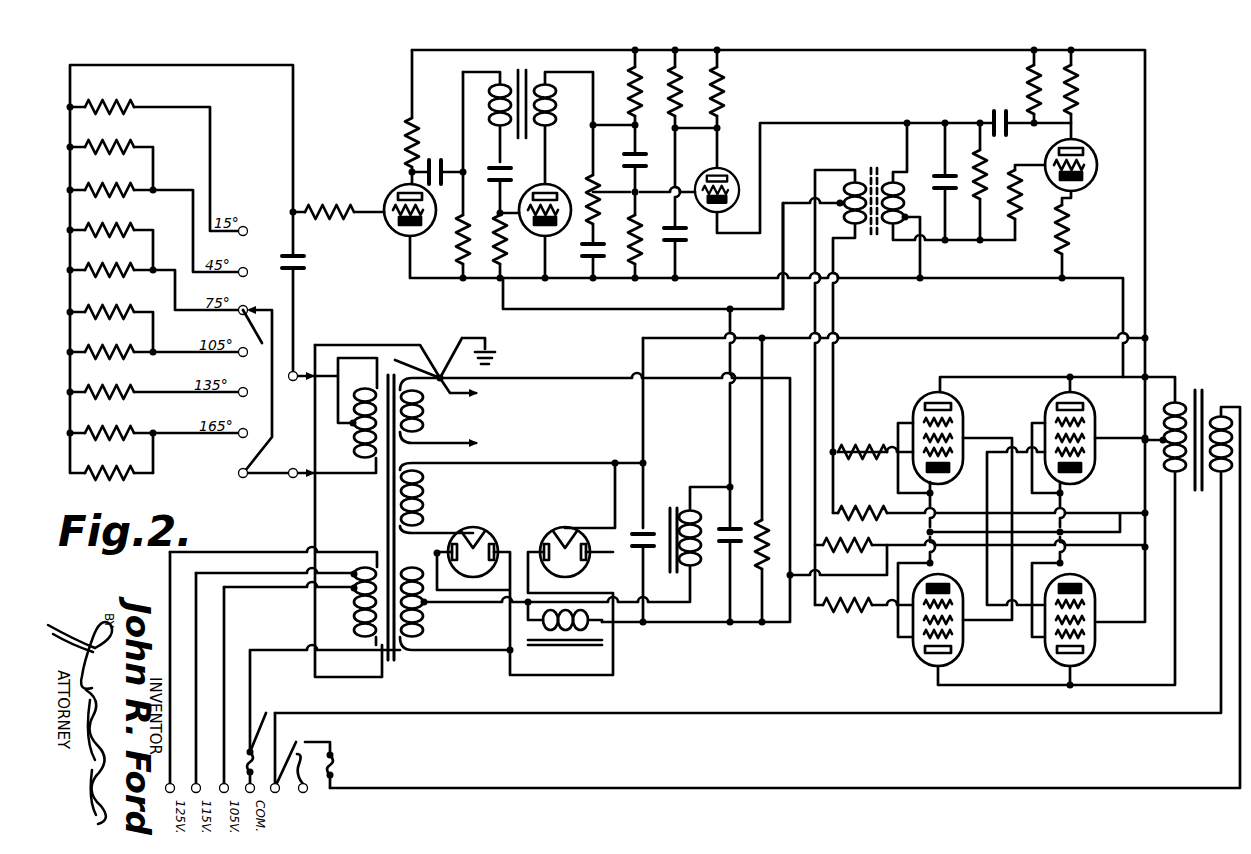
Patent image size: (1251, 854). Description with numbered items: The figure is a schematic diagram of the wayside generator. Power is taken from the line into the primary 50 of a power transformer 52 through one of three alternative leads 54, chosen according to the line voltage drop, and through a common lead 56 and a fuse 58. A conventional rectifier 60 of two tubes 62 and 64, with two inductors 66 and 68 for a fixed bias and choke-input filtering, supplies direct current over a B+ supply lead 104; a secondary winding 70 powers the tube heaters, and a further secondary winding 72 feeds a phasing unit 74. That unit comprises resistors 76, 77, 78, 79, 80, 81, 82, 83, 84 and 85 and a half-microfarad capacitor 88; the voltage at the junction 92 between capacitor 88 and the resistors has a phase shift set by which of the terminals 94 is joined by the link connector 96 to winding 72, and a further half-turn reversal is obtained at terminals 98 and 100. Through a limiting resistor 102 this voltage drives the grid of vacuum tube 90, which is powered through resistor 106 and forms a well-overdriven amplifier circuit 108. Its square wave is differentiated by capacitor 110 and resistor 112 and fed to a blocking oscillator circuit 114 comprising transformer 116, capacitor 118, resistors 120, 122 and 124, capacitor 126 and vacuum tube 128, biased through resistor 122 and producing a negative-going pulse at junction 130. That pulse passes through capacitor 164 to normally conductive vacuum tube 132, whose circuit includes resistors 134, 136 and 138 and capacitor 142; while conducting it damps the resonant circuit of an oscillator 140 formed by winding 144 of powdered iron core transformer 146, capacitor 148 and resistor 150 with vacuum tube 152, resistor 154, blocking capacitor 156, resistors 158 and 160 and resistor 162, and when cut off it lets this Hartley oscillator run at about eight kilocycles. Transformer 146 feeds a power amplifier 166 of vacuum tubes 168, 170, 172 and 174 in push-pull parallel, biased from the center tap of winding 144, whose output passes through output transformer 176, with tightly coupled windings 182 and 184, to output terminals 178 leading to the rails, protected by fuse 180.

The primary 50 is at (373, 567).
The power transformer 52 is at (453, 335).
The alternative leads 54 is at (222, 572).
The lead 56 is at (280, 639).
The fuse 58 is at (267, 737).
The rectifier 60 is at (632, 451).
The tube 62 is at (468, 578).
The tube 64 is at (592, 528).
The inductor 66 is at (694, 530).
The inductor 68 is at (600, 630).
The secondary winding 70 is at (425, 410).
The secondary winding 72 is at (355, 450).
The phasing unit 74 is at (264, 54).
The resistor 76 is at (132, 106).
The resistor 77 is at (134, 147).
The resistor 78 is at (140, 188).
The resistor 79 is at (135, 229).
The resistor 80 is at (135, 269).
The resistor 81 is at (134, 311).
The resistor 82 is at (135, 351).
The resistor 83 is at (134, 391).
The resistor 84 is at (135, 432).
The resistor 85 is at (134, 472).
The capacitor 88 is at (306, 262).
The vacuum tube 90 is at (392, 192).
The junction 92 is at (290, 212).
The terminals 94 is at (262, 412).
The link connector 96 is at (276, 420).
The terminal 98 is at (297, 372).
The terminal 100 is at (308, 457).
The resistor 102 is at (338, 197).
The B+ supply lead 104 is at (849, 46).
The resistor 106 is at (414, 128).
The amplifier circuit 108 is at (584, 43).
The capacitor 110 is at (447, 153).
The resistor 112 is at (462, 245).
The blocking oscillator circuit 114 is at (545, 118).
The transformer 116 is at (593, 78).
The capacitor 118 is at (520, 167).
The resistor 120 is at (596, 212).
The resistor 122 is at (505, 228).
The resistor 124 is at (638, 62).
The capacitor 126 is at (615, 262).
The vacuum tube 128 is at (561, 222).
The junction 130 is at (547, 172).
The vacuum tube 132 is at (703, 172).
The resistor 134 is at (640, 265).
The resistor 136 is at (680, 65).
The resistor 138 is at (725, 83).
The oscillator 140 is at (1107, 104).
The capacitor 142 is at (686, 234).
The primary 144 is at (848, 186).
The powdered iron core transformer 146 is at (899, 161).
The capacitor 148 is at (934, 180).
The resistor 150 is at (984, 182).
The vacuum tube 152 is at (1092, 155).
The resistor 154 is at (1014, 228).
The blocking capacitor 156 is at (994, 110).
The resistor 158 is at (1032, 85).
The resistor 160 is at (1099, 93).
The resistor 162 is at (1070, 232).
The capacitor 164 is at (658, 147).
The power amplifier 166 is at (1090, 369).
The vacuum tube 168 is at (955, 418).
The vacuum tube 170 is at (1046, 413).
The vacuum tube 172 is at (914, 660).
The vacuum tube 174 is at (1103, 645).
The output transformer 176 is at (1224, 377).
The output terminals 178 is at (301, 753).
The fuse 180 is at (338, 756).
The primary 182 is at (1220, 478).
The secondary 184 is at (1165, 471).